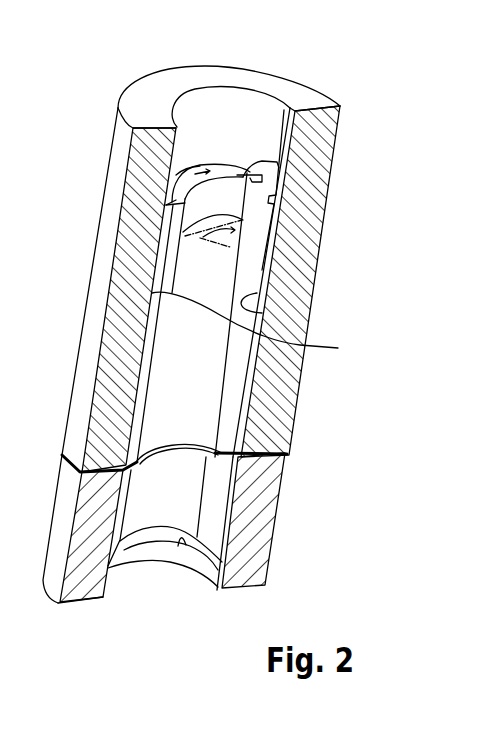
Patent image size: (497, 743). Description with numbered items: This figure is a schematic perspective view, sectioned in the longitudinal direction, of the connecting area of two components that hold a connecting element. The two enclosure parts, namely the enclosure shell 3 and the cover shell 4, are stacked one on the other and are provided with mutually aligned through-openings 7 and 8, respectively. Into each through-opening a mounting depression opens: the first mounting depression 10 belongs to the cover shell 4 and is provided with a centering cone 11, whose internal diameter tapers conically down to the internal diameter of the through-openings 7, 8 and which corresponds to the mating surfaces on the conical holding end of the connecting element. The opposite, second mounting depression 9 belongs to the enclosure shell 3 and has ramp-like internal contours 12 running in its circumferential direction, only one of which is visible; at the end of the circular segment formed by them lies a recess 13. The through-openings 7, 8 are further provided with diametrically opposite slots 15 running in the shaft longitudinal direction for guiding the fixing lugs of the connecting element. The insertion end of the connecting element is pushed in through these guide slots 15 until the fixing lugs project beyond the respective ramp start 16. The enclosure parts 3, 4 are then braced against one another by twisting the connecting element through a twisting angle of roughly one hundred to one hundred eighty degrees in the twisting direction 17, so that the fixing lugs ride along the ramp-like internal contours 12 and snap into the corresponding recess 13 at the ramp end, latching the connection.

The enclosure shell 3 is at (93, 337).
The cover shell 4 is at (65, 513).
The through-opening 7 is at (183, 387).
The through-opening 8 is at (170, 487).
The second mounting depression 9 is at (253, 127).
The first mounting depression 10 is at (167, 557).
The centering cone 11 is at (185, 548).
The ramp-like internal contours 12 is at (225, 165).
The recess 13 is at (252, 170).
The slots 15 is at (262, 313).
The ramp start 16 is at (175, 200).
The twisting direction 17 is at (179, 170).